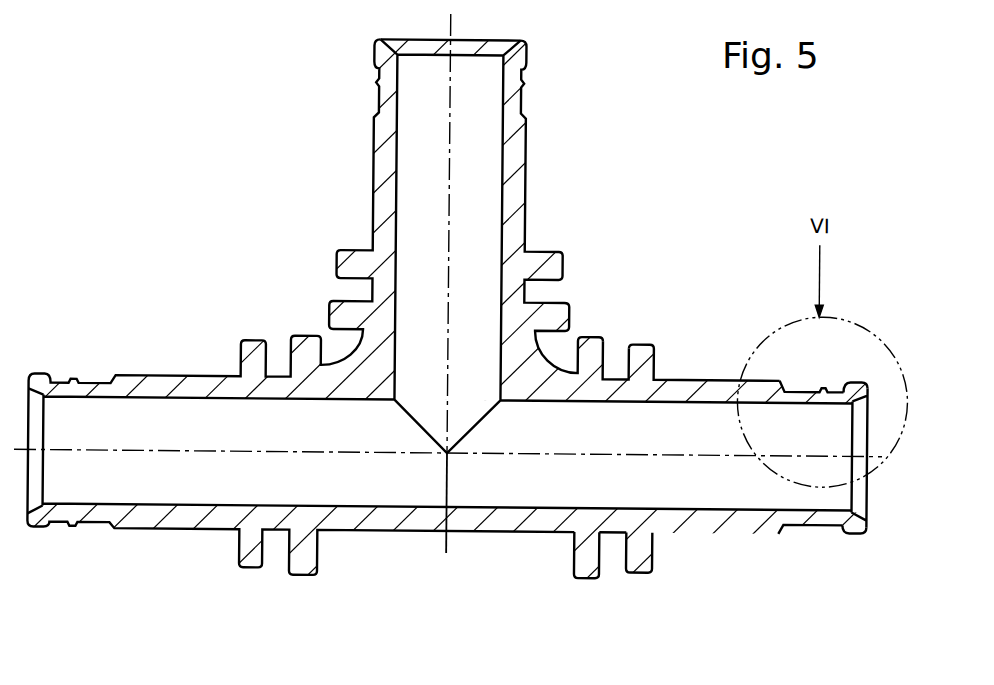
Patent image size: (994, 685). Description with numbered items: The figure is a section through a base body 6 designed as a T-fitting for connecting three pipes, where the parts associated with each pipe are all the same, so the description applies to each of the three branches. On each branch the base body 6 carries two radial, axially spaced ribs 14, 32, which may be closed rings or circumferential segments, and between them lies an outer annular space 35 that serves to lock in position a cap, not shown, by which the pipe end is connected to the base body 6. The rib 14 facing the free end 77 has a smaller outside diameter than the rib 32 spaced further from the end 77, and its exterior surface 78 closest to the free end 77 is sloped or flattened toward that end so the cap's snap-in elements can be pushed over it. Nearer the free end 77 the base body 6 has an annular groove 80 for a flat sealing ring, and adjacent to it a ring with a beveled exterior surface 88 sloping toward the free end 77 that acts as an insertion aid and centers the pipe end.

The base body 6 is at (368, 521).
The rib 14 is at (639, 558).
The rib 32 is at (577, 549).
The outer annular space 35 is at (612, 366).
The exterior surface of the rib 78 is at (640, 558).
The first annular groove 80 is at (793, 527).
The beveled exterior surface 88 is at (849, 530).
The free end 77 is at (868, 505).